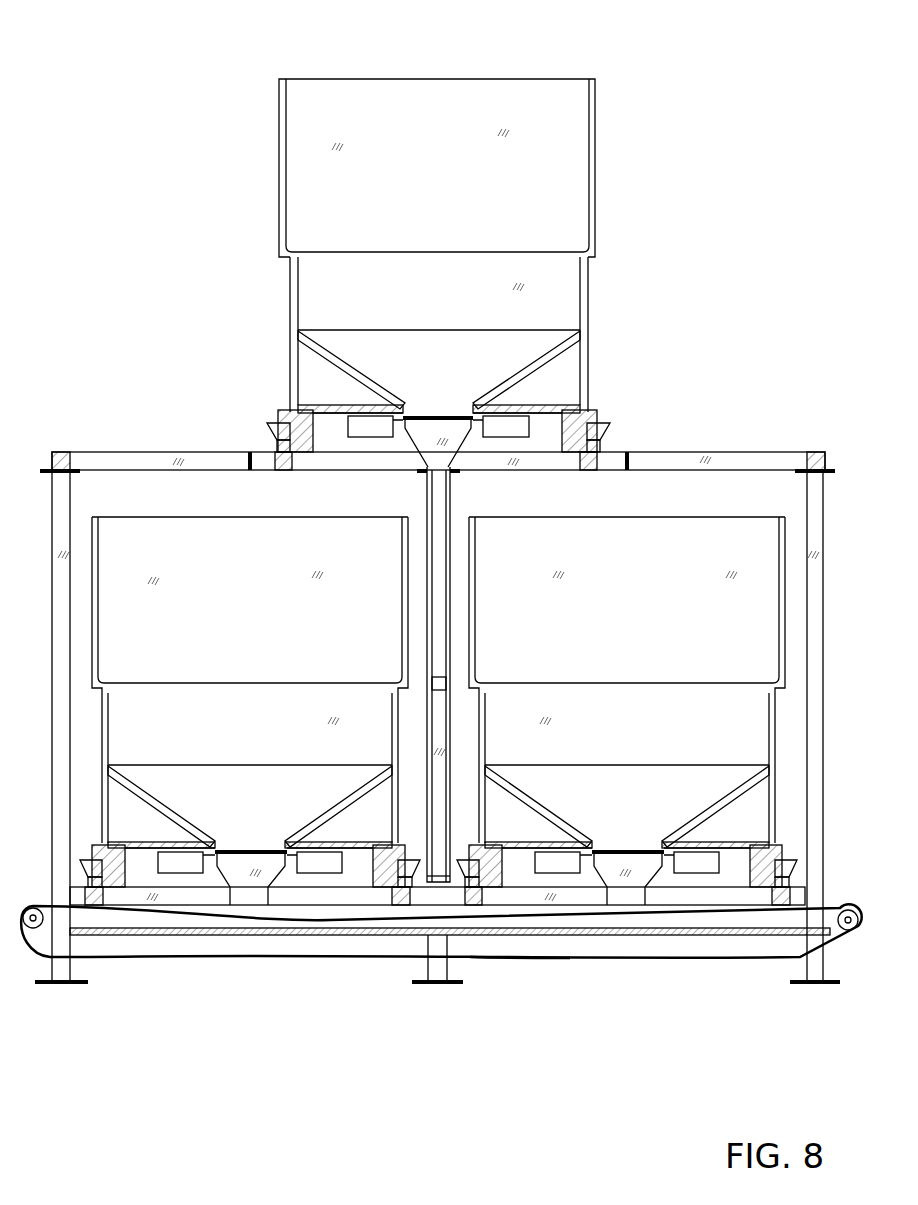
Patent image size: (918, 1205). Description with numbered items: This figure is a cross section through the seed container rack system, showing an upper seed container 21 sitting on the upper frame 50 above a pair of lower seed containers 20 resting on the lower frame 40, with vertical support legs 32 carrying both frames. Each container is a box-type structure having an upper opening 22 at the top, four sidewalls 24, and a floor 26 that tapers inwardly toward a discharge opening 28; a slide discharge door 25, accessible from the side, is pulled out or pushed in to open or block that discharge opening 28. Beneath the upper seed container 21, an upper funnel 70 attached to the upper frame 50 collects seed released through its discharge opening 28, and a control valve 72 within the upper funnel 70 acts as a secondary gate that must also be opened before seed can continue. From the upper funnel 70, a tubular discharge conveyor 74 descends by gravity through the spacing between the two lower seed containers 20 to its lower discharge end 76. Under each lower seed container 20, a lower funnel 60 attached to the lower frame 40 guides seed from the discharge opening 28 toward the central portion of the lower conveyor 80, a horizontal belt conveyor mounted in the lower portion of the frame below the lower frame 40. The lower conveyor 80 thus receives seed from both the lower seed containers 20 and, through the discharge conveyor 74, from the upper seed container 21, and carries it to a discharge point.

The lower seed container 20 is at (146, 512).
The upper seed container 21 is at (422, 234).
The upper opening 22 is at (541, 78).
The sidewalls 24 is at (586, 291).
The slide discharge door 25 is at (423, 407).
The floor 26 is at (430, 408).
The discharge opening 28 is at (437, 412).
The support legs 32 is at (70, 972).
The lower frame 40 is at (315, 909).
The upper frame 50 is at (726, 447).
The lower funnel 60 is at (252, 888).
The upper funnel 70 is at (455, 436).
The control valve 72 is at (436, 685).
The discharge conveyor 74 is at (427, 492).
The lower discharge end 76 is at (437, 876).
The lower conveyor 80 is at (512, 957).